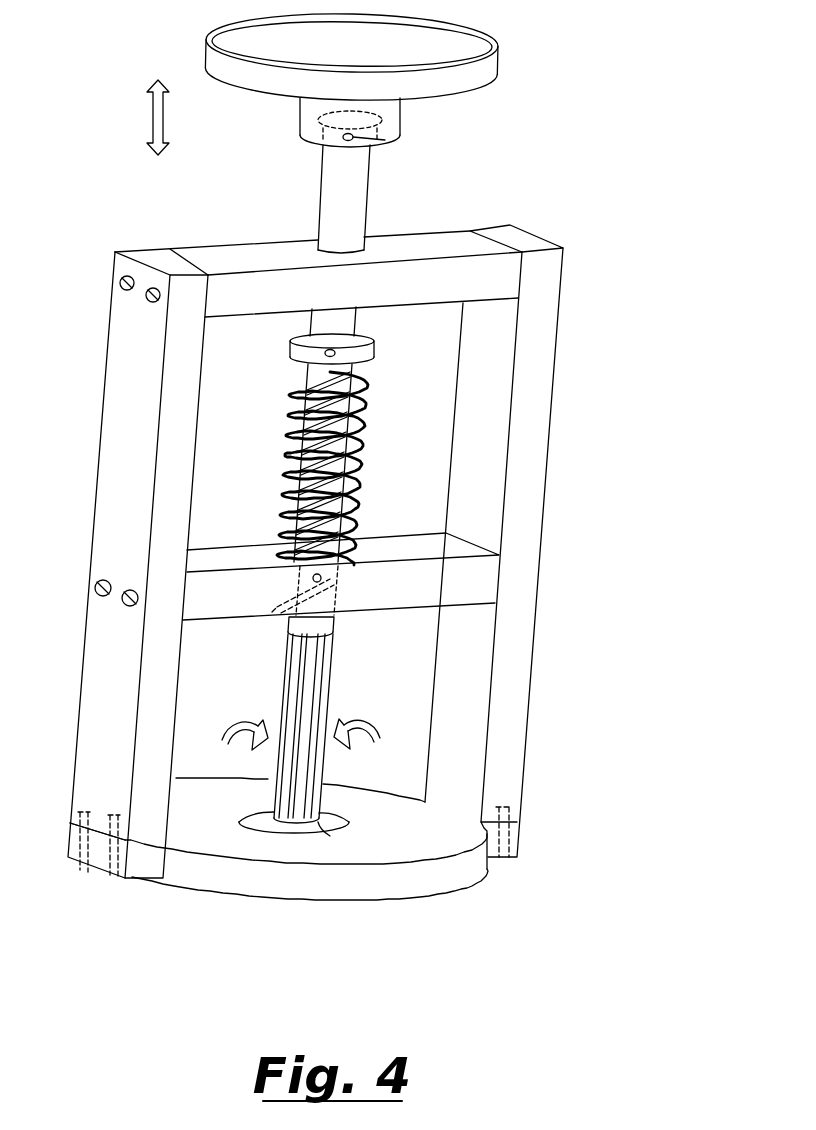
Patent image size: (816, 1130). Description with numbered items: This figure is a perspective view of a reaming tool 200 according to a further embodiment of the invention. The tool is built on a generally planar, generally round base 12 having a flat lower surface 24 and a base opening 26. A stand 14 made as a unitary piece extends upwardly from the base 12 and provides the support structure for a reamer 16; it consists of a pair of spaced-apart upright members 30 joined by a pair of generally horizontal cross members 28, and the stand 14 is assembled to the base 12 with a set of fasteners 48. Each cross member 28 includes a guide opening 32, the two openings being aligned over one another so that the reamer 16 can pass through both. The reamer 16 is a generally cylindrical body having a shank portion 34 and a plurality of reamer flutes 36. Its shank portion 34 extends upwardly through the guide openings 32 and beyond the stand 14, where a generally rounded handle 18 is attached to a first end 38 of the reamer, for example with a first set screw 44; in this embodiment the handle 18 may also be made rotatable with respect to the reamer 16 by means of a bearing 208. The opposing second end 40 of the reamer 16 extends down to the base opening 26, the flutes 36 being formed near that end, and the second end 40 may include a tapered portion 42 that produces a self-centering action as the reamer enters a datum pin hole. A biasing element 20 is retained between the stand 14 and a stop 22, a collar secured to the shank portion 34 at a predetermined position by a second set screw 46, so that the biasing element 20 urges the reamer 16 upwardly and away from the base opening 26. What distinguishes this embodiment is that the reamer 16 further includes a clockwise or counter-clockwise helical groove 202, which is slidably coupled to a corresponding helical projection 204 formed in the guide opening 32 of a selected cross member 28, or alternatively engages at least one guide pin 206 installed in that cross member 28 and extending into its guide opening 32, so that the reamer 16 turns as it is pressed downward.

The reaming tool 200 is at (88, 90).
The base 12 is at (208, 878).
The stand 14 is at (88, 541).
The reamer 16 is at (318, 163).
The handle 18 is at (497, 63).
The biasing element 20 is at (366, 469).
The stop 22 is at (290, 345).
The lower surface 24 is at (312, 900).
The base opening 26 is at (354, 822).
The cross members 28 is at (412, 232).
The upright members 30 is at (101, 413).
The guide opening 32 is at (318, 249).
The shank portion 34 is at (372, 318).
The reamer flutes 36 is at (290, 700).
The first end 38 is at (300, 129).
The second end 40 is at (243, 819).
The tapered portion 42 is at (320, 826).
The first set screw 44 is at (387, 141).
The second set screw 46 is at (338, 354).
The fasteners 48 is at (127, 291).
The helical groove 202 is at (292, 448).
The helical projection 204 is at (272, 612).
The guide pin 206 is at (300, 579).
The bearing 208 is at (398, 124).